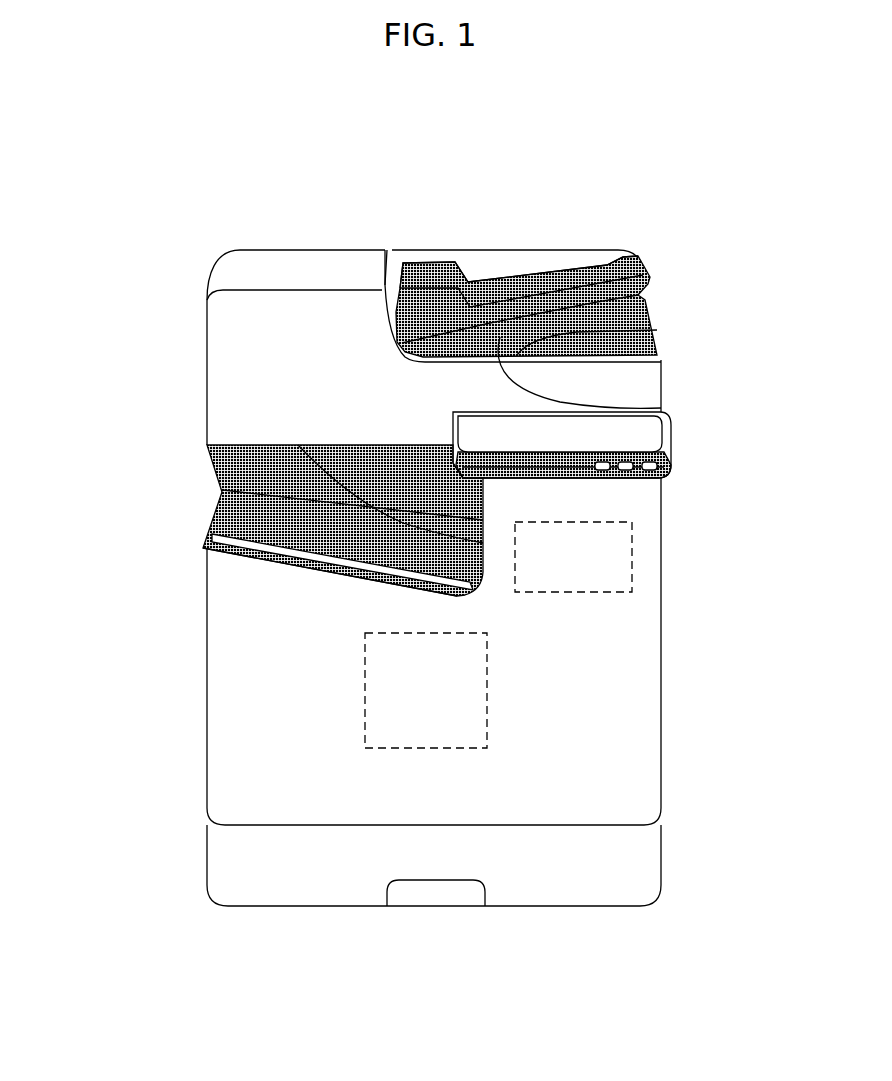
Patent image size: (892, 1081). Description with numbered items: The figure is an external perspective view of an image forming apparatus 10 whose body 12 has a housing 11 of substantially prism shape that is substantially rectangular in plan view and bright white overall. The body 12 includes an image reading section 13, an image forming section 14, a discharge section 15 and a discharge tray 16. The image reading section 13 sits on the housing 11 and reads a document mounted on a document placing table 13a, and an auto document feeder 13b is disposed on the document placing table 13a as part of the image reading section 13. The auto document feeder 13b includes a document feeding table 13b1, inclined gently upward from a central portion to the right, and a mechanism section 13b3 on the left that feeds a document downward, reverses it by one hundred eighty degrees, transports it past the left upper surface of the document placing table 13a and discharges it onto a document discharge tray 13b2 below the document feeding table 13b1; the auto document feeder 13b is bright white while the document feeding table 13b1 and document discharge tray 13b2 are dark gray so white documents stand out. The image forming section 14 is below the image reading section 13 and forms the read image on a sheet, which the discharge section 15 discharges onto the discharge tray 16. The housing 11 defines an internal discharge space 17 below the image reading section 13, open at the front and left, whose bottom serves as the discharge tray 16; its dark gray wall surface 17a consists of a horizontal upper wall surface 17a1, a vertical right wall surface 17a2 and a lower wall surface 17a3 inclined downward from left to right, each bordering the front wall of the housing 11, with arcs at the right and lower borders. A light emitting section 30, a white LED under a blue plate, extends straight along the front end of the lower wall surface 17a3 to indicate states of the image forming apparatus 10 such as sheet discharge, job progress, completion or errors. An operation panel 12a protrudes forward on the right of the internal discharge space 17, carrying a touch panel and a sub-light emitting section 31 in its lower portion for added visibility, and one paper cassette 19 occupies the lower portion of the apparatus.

The image forming apparatus 10 is at (497, 188).
The housing 11 is at (207, 708).
The body 12 is at (104, 516).
The operation panel 12a is at (625, 442).
The image reading section 13 is at (760, 232).
The document placing table 13a is at (648, 328).
The auto document feeder (ADF) 13b is at (563, 233).
The document feeding table 13b1 is at (518, 287).
The document discharge tray 13b2 is at (622, 345).
The mechanism section 13b3 is at (362, 445).
The image forming section 14 is at (475, 655).
The discharge section 15 is at (597, 595).
The discharge tray 16 is at (292, 528).
The internal discharge space 17 is at (235, 445).
The wall surface 17a is at (77, 192).
The upper wall surface 17a1 is at (340, 451).
The right wall surface 17a2 is at (302, 528).
The lower wall surface 17a3 is at (272, 482).
The paper cassette 19 is at (603, 877).
The light emitting section 30 is at (330, 556).
The sub-light emitting section 31 is at (630, 480).